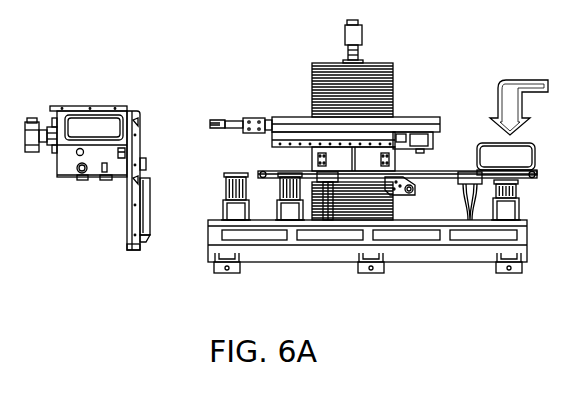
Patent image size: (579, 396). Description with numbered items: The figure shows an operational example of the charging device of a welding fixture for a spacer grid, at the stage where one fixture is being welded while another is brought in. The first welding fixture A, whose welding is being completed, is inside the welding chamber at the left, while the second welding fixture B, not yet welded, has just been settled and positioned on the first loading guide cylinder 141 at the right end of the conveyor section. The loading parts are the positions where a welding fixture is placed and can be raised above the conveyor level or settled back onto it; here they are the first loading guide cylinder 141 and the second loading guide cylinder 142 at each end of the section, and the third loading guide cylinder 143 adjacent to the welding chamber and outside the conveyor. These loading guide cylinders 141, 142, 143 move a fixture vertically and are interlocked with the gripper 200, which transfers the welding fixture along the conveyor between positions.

The first welding fixture A is at (90, 127).
The second welding fixture B is at (523, 163).
The gripper 200 is at (233, 117).
The first loading guide cylinder 141 is at (508, 207).
The second loading guide cylinder 142 is at (290, 210).
The third loading guide cylinder 143 is at (233, 207).